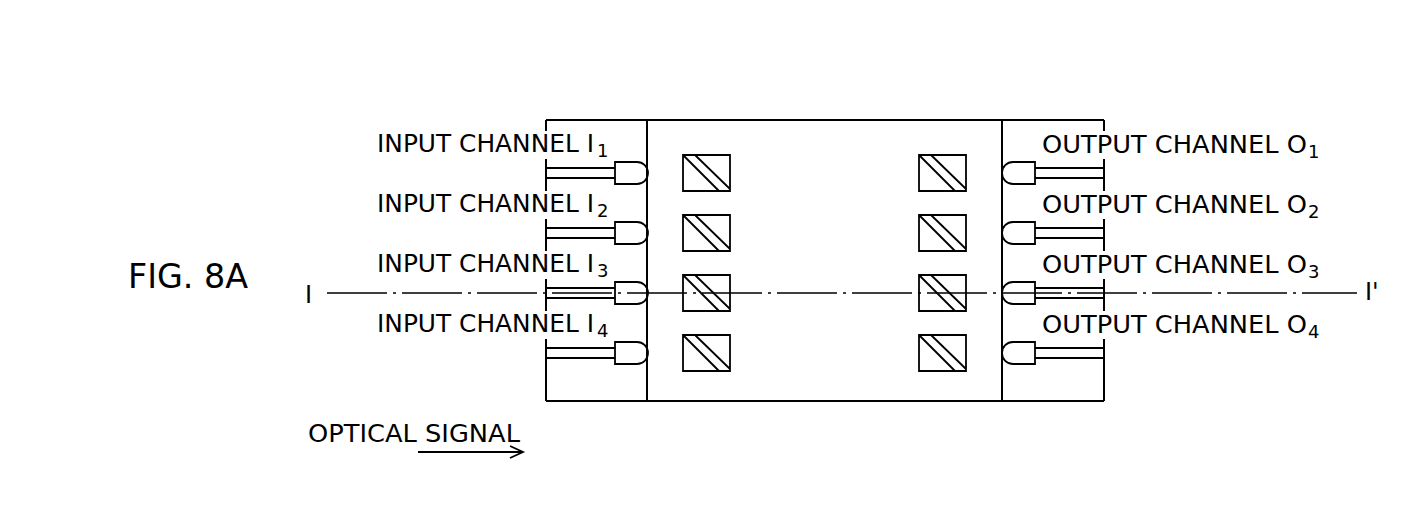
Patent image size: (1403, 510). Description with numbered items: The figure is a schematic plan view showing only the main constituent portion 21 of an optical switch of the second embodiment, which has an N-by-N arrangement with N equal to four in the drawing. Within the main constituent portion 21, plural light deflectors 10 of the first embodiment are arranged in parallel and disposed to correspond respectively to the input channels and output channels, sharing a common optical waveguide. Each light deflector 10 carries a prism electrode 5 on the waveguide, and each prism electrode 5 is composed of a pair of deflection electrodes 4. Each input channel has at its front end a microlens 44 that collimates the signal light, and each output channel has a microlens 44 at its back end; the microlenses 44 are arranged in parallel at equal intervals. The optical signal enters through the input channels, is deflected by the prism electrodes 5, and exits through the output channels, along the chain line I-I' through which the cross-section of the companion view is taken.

The deflection electrode 4 is at (730, 350).
The prism electrode 5 is at (873, 267).
The light deflector 10 is at (855, 267).
The main constituent portion 21 is at (1105, 114).
The microlens 44 is at (631, 168).